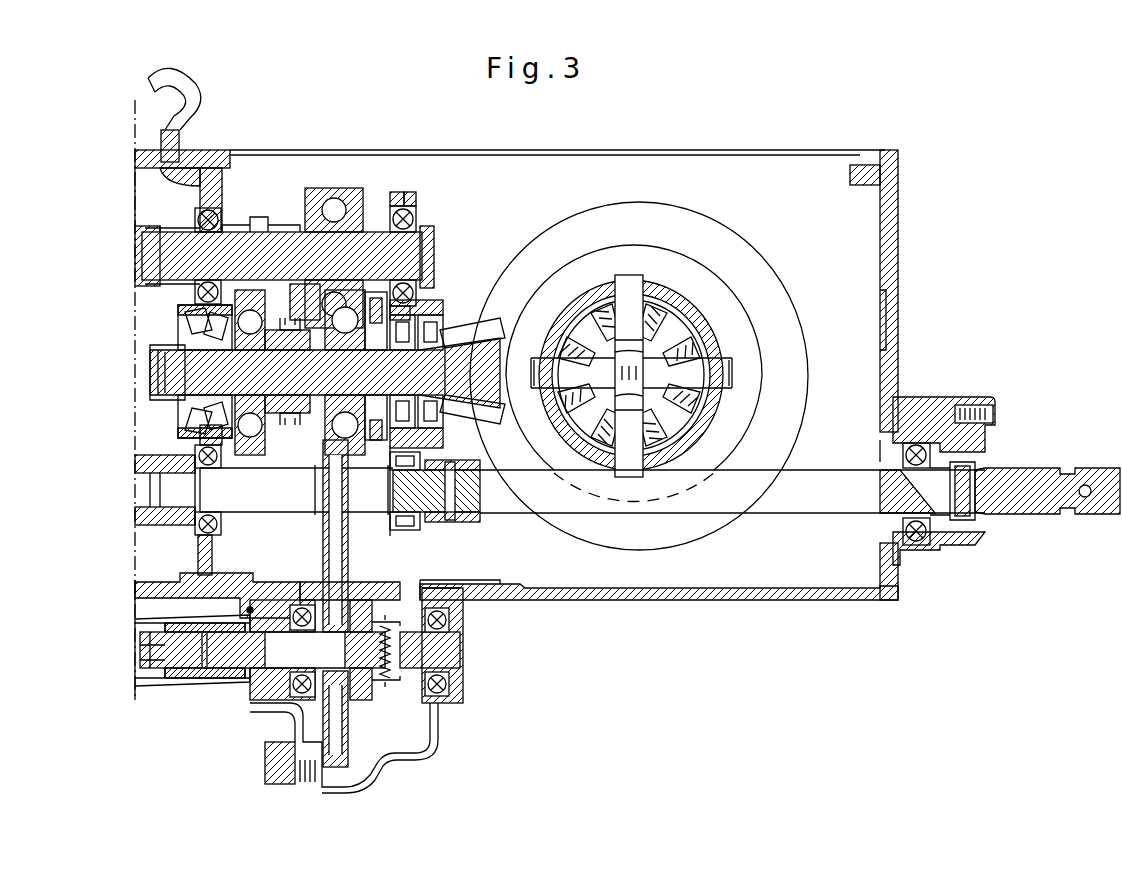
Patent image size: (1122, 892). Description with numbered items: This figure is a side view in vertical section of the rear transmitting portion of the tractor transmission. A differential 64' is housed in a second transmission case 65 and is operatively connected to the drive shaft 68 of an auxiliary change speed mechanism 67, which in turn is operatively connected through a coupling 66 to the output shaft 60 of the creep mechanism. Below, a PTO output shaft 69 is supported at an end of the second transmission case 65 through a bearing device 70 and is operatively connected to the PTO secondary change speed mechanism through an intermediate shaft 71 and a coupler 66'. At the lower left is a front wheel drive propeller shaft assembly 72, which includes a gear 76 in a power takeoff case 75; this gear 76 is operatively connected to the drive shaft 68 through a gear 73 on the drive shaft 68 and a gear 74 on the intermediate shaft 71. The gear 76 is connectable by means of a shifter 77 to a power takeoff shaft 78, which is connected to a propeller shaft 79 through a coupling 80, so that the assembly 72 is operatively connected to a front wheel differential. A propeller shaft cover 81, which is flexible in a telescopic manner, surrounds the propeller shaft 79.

The creep output shaft 60 is at (148, 232).
The differential 64' is at (649, 376).
The second transmission case 65 is at (590, 600).
The coupling 66 is at (305, 248).
The coupler 66' is at (178, 500).
The auxiliary change speed mechanism 67 is at (298, 218).
The drive shaft 68 is at (440, 305).
The PTO output shaft 69 is at (785, 513).
The bearing device 70 is at (922, 562).
The intermediate shaft 71 is at (262, 512).
The front wheel drive propeller shaft assembly 72 is at (190, 698).
The gear 73 is at (440, 425).
The gear 74 is at (348, 535).
The power takeoff case 75 is at (432, 740).
The gear 76 is at (345, 730).
The shifter 77 is at (388, 695).
The power takeoff shaft 78 is at (250, 660).
The propeller shaft 79 is at (150, 655).
The coupling 80 is at (222, 678).
The propeller shaft cover 81 is at (165, 692).